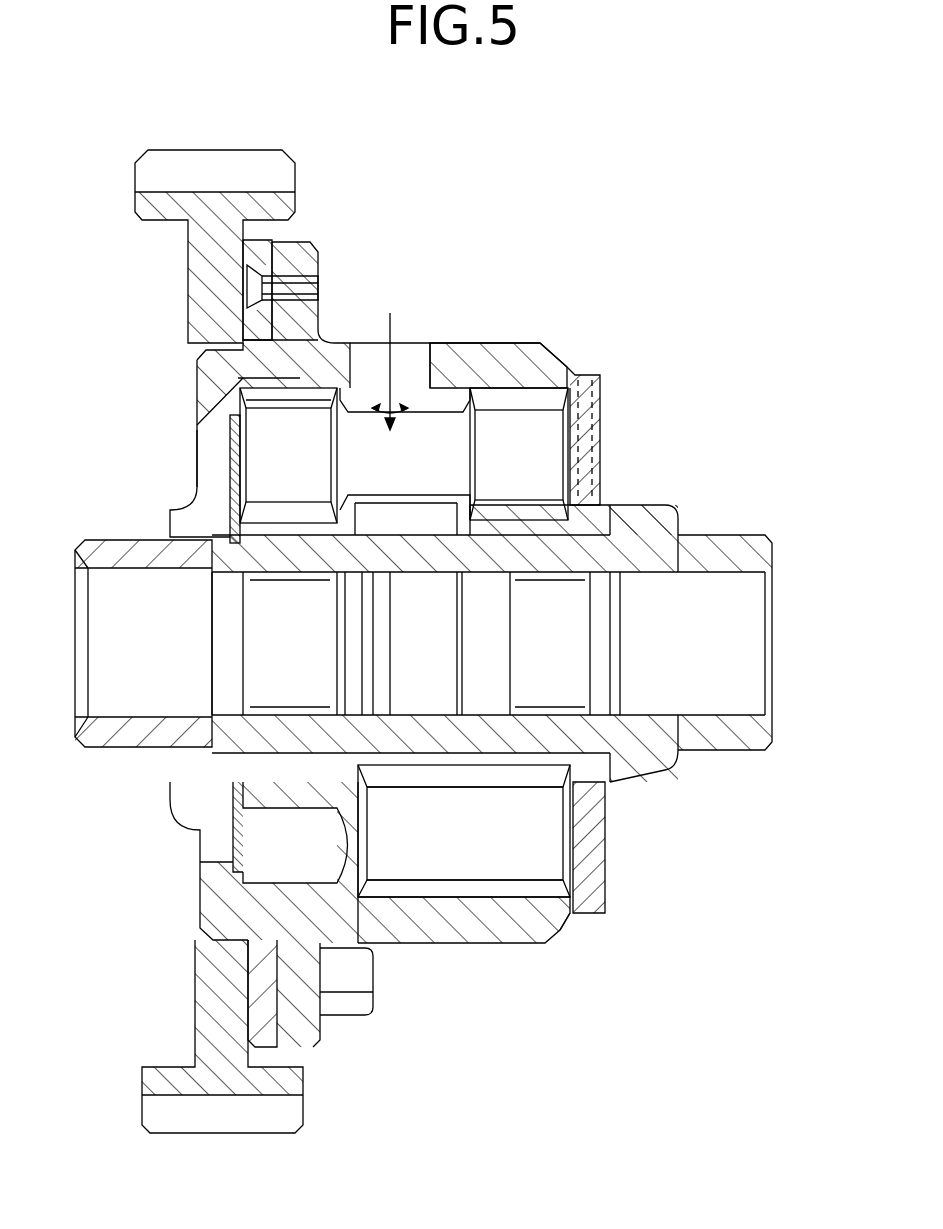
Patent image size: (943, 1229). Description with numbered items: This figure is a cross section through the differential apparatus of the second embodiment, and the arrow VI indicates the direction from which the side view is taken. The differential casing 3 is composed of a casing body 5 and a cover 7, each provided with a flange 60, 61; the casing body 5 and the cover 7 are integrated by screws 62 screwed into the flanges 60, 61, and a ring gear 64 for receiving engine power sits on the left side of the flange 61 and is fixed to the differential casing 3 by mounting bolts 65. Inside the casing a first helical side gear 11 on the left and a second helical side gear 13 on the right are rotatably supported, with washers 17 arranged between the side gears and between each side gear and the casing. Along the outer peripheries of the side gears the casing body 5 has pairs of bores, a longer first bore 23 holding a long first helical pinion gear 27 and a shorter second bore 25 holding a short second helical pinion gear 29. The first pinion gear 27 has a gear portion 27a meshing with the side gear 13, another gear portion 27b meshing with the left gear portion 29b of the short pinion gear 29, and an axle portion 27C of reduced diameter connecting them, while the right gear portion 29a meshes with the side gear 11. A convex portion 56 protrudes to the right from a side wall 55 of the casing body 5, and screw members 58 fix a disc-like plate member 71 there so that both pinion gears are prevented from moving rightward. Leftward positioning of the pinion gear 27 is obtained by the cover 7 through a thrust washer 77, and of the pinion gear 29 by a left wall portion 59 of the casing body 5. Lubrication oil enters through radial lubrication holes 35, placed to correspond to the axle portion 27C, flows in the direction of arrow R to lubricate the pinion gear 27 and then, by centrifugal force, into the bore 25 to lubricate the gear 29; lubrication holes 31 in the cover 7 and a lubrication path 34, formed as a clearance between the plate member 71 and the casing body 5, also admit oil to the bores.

The differential casing 3 is at (528, 285).
The casing body 5 is at (545, 360).
The cover 7 is at (190, 380).
The first helical side gear 11 is at (298, 733).
The second helical side gear 13 is at (485, 733).
The washer 17 is at (312, 492).
The first bore 23 is at (470, 382).
The second bore 25 is at (498, 890).
The first helical pinion gear 27 is at (412, 402).
The gear portion 27a is at (262, 400).
The gear portion 27b is at (548, 398).
The axle portion 27C is at (433, 478).
The second helical pinion gear 29 is at (452, 897).
The right gear portion 29a is at (408, 890).
The left gear portion 29b is at (538, 890).
The lubrication hole 31 is at (212, 470).
The lubrication path 34 is at (568, 915).
The lubrication hole 35 is at (365, 360).
The side wall 55 is at (540, 525).
The convex portion 56 is at (585, 378).
The screw member 58 is at (595, 443).
The left wall portion 59 is at (325, 910).
The flange 60 is at (293, 262).
The flange 61 is at (258, 262).
The screw 62 is at (300, 292).
The ring gear 64 is at (212, 1120).
The mounting bolt 65 is at (355, 1008).
The plate member 71 is at (585, 830).
The thrust washer 77 is at (235, 510).
The arrow R is at (408, 295).
The arrow VI is at (836, 643).